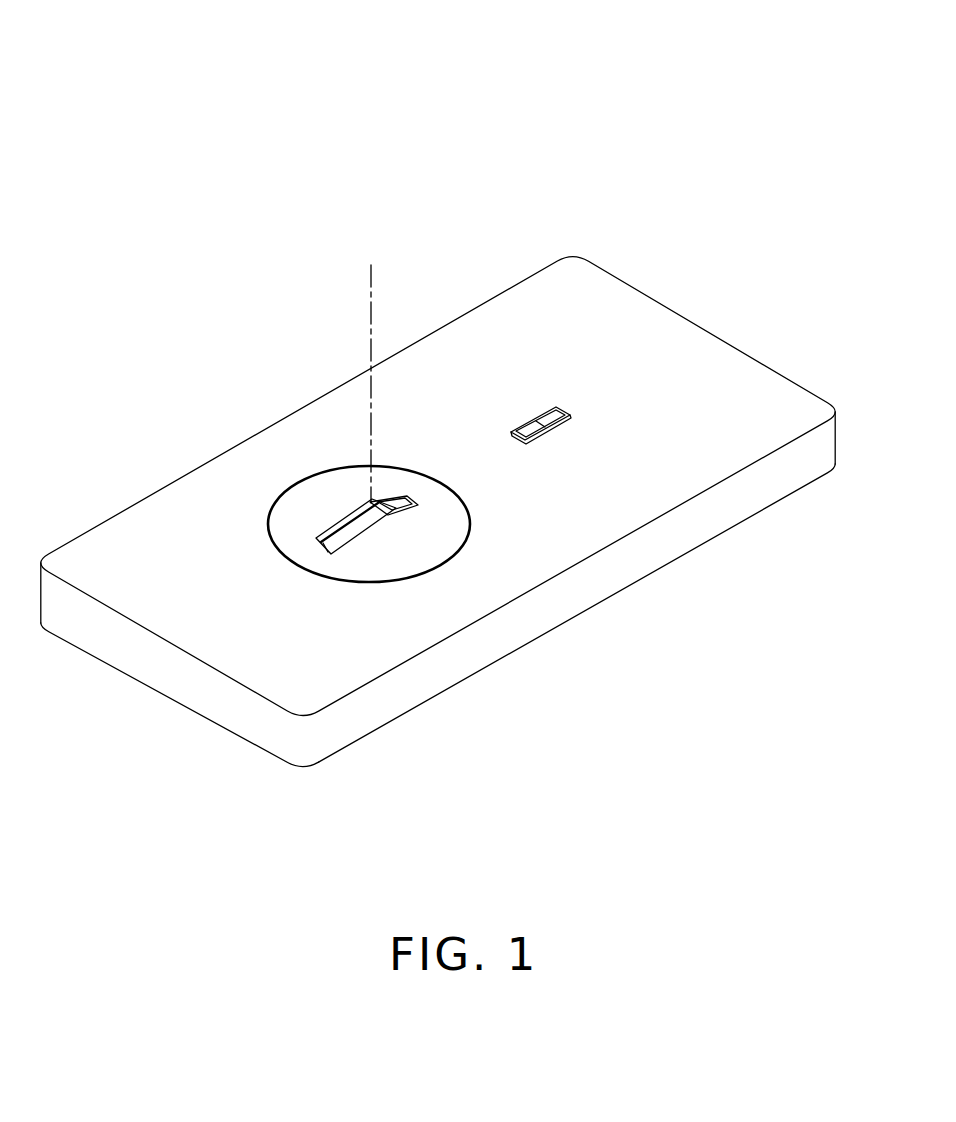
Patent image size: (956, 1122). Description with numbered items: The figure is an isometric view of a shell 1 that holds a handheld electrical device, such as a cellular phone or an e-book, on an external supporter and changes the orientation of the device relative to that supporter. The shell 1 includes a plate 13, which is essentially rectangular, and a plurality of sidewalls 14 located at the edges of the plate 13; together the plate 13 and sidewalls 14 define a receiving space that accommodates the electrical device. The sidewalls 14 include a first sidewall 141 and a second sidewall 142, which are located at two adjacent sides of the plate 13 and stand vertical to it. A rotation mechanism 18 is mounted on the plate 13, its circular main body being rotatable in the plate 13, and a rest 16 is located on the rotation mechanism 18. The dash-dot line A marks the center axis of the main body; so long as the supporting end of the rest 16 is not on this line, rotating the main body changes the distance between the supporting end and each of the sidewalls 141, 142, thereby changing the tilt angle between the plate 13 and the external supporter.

The shell 1 is at (413, 92).
The plate 13 is at (643, 327).
The sidewalls 14 is at (276, 870).
The first sidewall 141 is at (360, 710).
The second sidewall 142 is at (235, 708).
The rest 16 is at (388, 502).
The rotation mechanism 18 is at (427, 532).